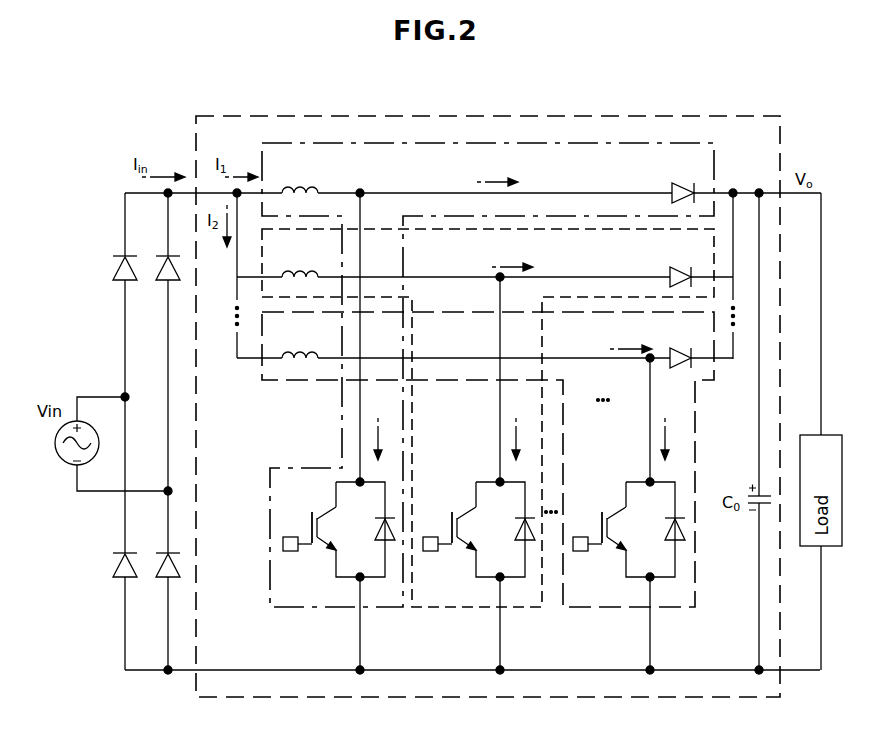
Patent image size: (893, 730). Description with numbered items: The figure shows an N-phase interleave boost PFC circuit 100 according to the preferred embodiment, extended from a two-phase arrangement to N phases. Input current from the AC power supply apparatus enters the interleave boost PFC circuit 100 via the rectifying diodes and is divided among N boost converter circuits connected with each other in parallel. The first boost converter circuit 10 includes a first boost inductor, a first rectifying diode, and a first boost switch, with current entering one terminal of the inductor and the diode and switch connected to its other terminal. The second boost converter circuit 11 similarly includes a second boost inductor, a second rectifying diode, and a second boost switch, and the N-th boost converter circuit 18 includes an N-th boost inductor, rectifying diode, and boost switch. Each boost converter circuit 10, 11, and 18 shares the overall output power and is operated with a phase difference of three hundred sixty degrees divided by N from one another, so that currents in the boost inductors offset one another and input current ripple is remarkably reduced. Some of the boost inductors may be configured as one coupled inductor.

The interleave boost PFC circuit 100 is at (522, 115).
The boost converter circuit 10 is at (280, 608).
The boost converter circuit 11 is at (443, 608).
The boost converter circuit 18 is at (582, 608).